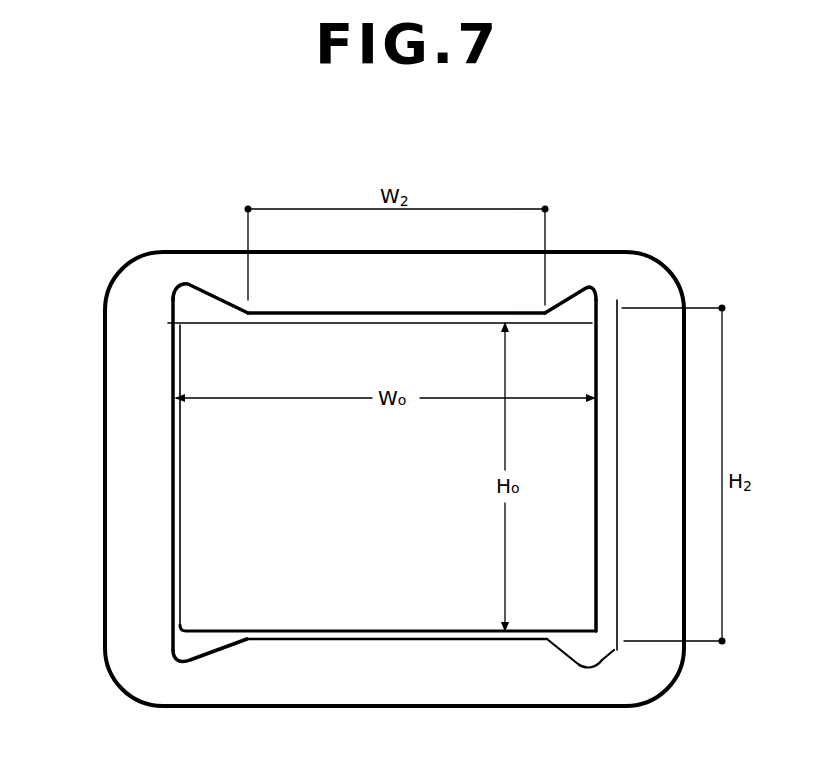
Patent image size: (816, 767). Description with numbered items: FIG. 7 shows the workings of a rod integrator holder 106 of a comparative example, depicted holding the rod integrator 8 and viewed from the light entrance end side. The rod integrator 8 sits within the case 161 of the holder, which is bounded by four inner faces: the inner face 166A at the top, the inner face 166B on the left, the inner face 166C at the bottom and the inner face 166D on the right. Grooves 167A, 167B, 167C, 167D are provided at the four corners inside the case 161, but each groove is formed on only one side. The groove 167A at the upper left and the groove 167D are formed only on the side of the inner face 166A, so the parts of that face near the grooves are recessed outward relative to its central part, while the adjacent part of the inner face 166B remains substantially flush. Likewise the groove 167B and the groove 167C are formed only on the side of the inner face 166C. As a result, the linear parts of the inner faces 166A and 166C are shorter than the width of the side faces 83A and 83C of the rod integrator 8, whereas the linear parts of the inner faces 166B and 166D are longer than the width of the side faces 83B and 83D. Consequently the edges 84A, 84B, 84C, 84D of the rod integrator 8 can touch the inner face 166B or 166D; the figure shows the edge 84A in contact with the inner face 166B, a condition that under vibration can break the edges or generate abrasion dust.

The rod integrator holder 106 is at (384, 467).
The case 161 is at (157, 222).
The rod integrator 8 is at (392, 526).
The side face 83A is at (386, 313).
The side face 83B is at (173, 570).
The side face 83C is at (474, 632).
The side face 83D is at (596, 433).
The edge 84A is at (168, 325).
The edge 84B is at (174, 636).
The edge 84C is at (614, 650).
The edge 84D is at (617, 302).
The inner face 166A is at (330, 323).
The inner face 166B is at (180, 520).
The inner face 166C is at (413, 639).
The inner face 166D is at (617, 492).
The groove 167A is at (193, 290).
The groove 167B is at (188, 662).
The groove 167C is at (590, 665).
The groove 167D is at (592, 292).